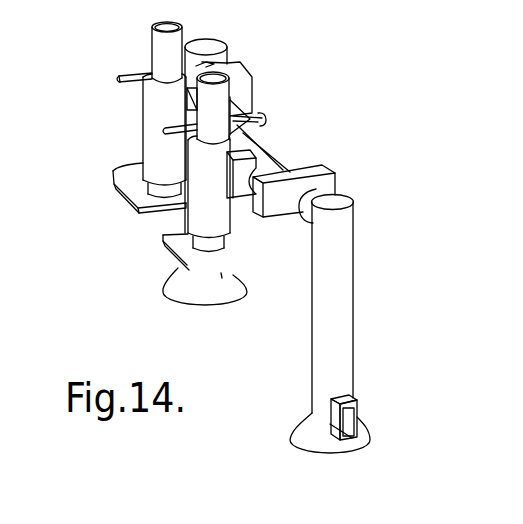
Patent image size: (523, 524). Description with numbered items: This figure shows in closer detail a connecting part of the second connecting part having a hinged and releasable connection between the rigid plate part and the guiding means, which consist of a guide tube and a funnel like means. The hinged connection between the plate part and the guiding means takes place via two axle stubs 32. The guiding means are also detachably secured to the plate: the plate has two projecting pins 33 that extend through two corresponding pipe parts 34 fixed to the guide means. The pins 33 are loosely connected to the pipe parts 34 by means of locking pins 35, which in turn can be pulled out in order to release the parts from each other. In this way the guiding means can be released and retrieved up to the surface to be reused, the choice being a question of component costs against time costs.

The projecting pin 33 is at (156, 52).
The locking pin 35 is at (118, 78).
The pipe part 34 is at (200, 212).
The axle stub 32 is at (316, 190).